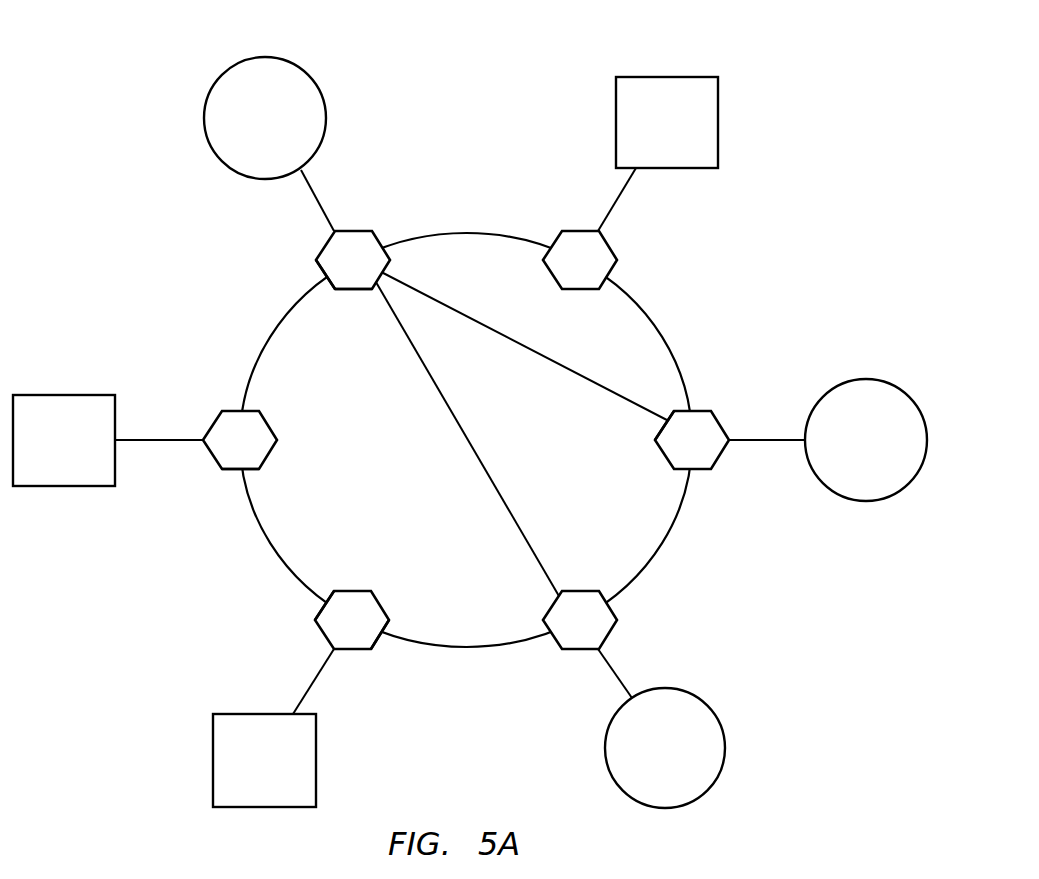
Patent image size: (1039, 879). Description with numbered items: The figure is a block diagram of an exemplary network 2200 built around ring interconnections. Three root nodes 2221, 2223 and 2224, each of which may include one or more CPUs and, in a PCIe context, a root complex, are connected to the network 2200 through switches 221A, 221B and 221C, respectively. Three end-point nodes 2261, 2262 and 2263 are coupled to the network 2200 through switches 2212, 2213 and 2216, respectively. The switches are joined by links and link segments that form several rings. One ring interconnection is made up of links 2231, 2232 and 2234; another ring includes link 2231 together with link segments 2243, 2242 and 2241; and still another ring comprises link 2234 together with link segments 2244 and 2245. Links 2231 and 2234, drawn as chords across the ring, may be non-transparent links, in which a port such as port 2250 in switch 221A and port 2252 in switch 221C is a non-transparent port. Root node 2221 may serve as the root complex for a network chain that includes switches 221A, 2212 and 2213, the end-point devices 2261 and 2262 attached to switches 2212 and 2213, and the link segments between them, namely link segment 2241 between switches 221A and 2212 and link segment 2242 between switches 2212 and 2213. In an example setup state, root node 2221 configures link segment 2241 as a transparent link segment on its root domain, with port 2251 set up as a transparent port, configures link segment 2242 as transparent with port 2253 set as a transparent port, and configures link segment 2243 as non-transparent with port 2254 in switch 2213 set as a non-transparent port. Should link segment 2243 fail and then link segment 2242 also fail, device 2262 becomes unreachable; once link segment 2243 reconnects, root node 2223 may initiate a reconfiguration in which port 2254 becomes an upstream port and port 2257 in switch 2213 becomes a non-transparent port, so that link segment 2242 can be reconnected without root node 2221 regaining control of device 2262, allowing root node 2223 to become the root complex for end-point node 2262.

The network 2200 is at (99, 61).
The switch 221A is at (378, 271).
The switch 221B is at (606, 630).
The switch 221C is at (718, 451).
The switch 2212 is at (264, 452).
The switch 2213 is at (378, 630).
The switch 2216 is at (605, 271).
The root node 2221 is at (290, 133).
The root node 2223 is at (690, 762).
The root node 2224 is at (891, 454).
The end-point node 2261 is at (89, 453).
The end-point node 2262 is at (289, 774).
The end-point node 2263 is at (692, 137).
The link 2231 is at (507, 510).
The link 2234 is at (545, 358).
The link 2232 is at (673, 530).
The link segment 2241 is at (258, 353).
The link segment 2242 is at (260, 530).
The link segment 2243 is at (485, 648).
The link segment 2244 is at (654, 322).
The link segment 2245 is at (483, 232).
The port 2250 is at (364, 290).
The port 2251 is at (325, 275).
The port 2252 is at (665, 424).
The port 2253 is at (238, 470).
The port 2254 is at (385, 632).
The port 2257 is at (327, 603).